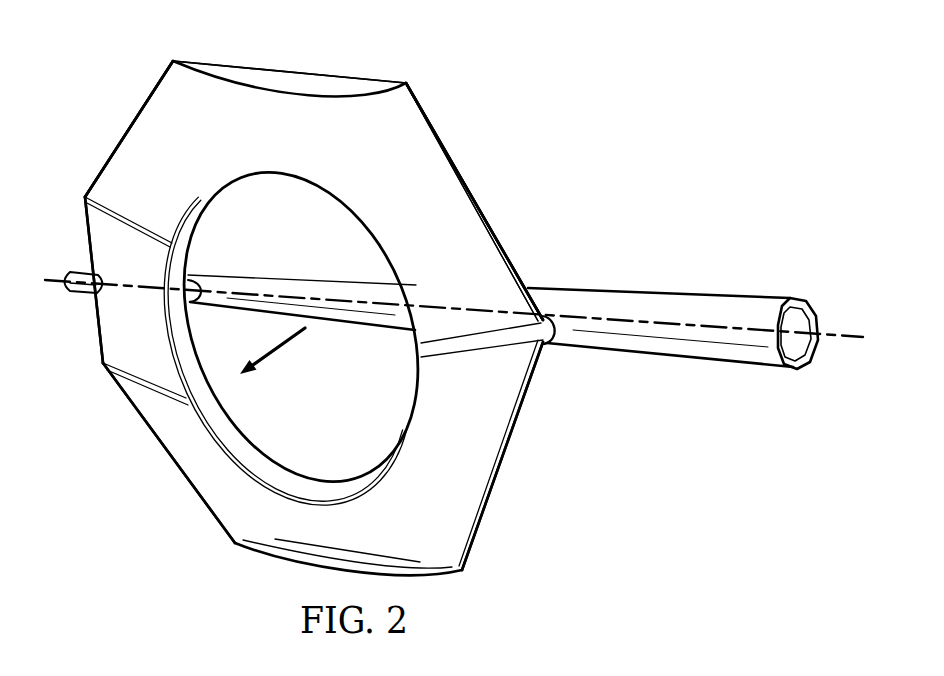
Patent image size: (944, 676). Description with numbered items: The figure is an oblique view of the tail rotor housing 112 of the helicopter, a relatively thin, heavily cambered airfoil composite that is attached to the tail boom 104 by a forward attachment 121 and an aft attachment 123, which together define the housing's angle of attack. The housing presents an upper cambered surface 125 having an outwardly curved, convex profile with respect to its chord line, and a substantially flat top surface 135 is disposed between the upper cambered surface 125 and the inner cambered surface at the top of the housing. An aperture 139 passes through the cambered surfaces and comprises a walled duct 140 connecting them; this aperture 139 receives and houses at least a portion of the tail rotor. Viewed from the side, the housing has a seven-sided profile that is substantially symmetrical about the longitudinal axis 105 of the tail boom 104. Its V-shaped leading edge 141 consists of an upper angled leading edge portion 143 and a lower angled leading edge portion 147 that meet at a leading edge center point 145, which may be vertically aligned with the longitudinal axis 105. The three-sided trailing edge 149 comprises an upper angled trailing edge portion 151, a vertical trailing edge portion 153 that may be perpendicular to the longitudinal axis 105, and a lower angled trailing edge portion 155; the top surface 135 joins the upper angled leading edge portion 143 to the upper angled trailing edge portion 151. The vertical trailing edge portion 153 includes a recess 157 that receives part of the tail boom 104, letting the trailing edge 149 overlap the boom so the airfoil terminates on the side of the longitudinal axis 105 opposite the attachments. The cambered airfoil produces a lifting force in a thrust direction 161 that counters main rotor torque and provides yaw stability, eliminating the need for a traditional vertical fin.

The tail boom 104 is at (722, 292).
The longitudinal axis 105 is at (853, 334).
The tail rotor housing 112 is at (558, 58).
The forward attachment 121 is at (557, 318).
The aft attachment 123 is at (208, 297).
The upper cambered surface 125 is at (402, 142).
The top surface 135 is at (309, 84).
The aperture 139 is at (352, 380).
The walled duct 140 is at (297, 473).
The leading edge 141 is at (478, 175).
The upper angled leading edge portion 143 is at (490, 228).
The leading edge center point 145 is at (558, 344).
The lower angled leading edge portion 147 is at (508, 453).
The trailing edge 149 is at (125, 108).
The upper angled trailing edge portion 151 is at (107, 162).
The vertical trailing edge portion 153 is at (86, 238).
The lower angled trailing edge portion 155 is at (170, 457).
The recess 157 is at (107, 293).
The thrust direction 161 is at (283, 347).